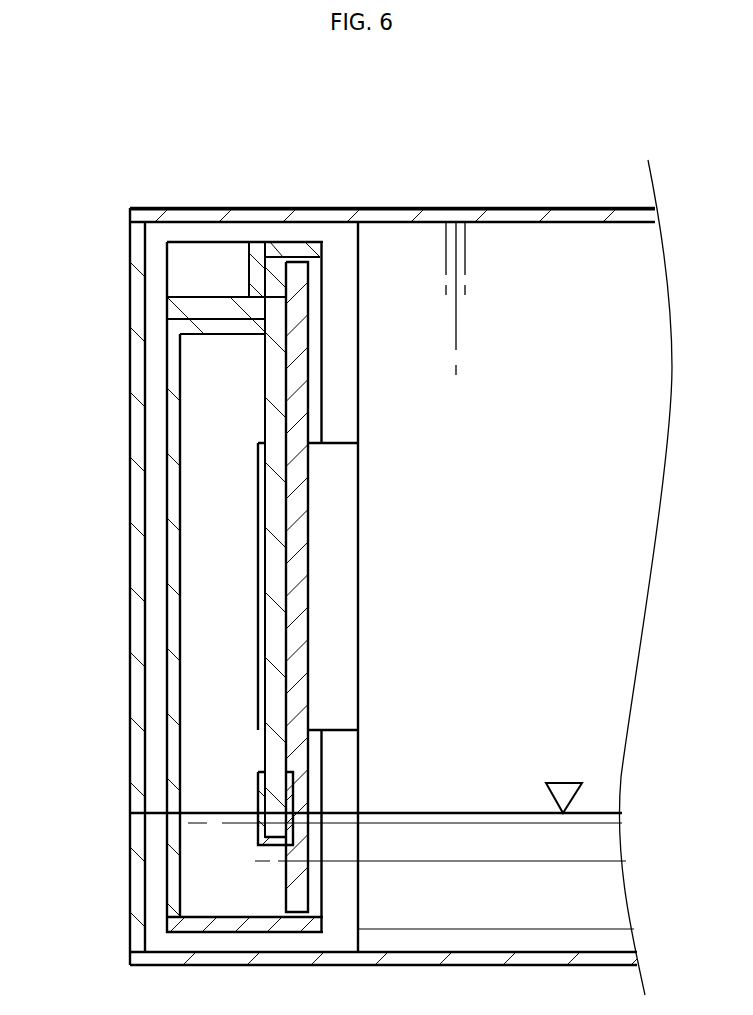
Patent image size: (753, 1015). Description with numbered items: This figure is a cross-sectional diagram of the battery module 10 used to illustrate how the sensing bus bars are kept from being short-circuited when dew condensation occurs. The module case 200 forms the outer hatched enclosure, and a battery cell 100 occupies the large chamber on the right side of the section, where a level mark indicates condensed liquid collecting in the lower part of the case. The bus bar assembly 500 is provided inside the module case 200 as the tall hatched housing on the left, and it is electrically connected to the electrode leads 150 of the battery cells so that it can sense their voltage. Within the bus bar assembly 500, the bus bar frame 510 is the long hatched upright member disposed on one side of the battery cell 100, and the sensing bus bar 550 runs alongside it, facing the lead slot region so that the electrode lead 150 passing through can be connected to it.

The battery module 10 is at (170, 145).
The battery cell 100 is at (520, 257).
The electrode lead 150 is at (258, 560).
The module case 200 is at (113, 770).
The bus bar assembly 500 is at (220, 362).
The bus bar frame 510 is at (297, 278).
The sensing bus bar 550 is at (278, 355).